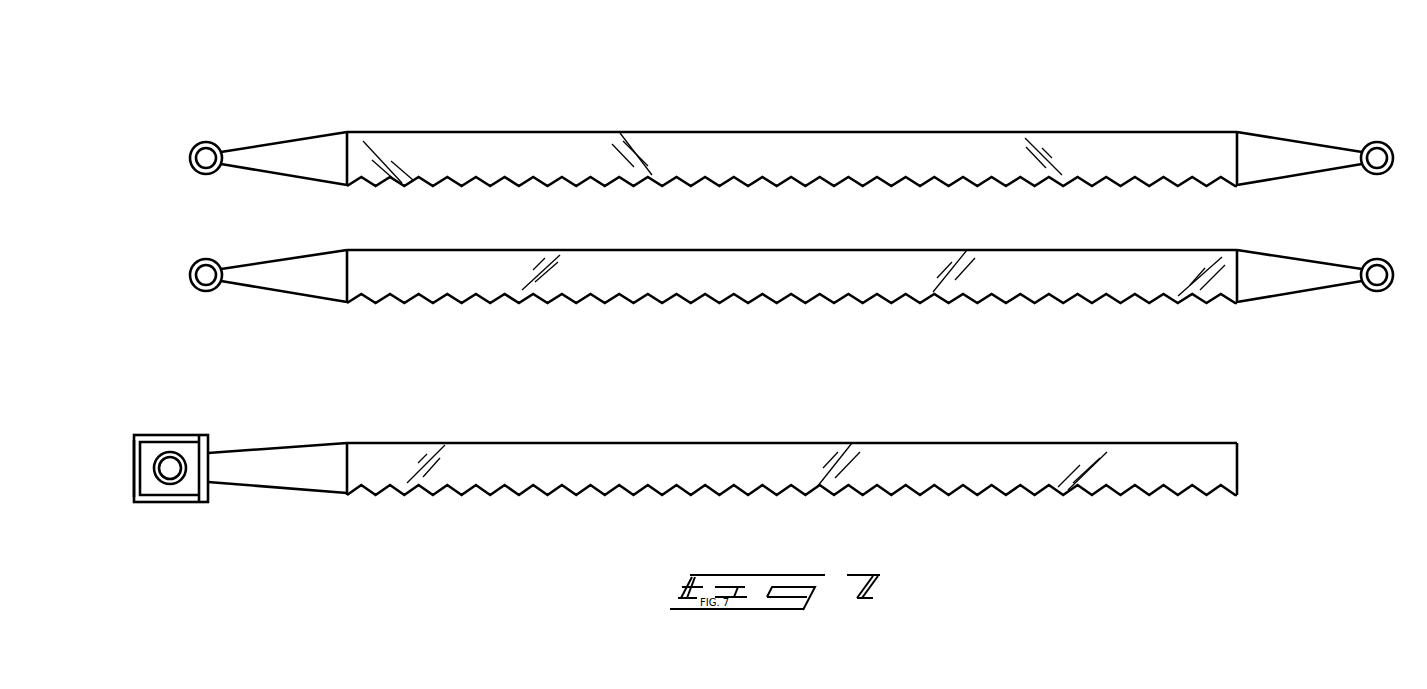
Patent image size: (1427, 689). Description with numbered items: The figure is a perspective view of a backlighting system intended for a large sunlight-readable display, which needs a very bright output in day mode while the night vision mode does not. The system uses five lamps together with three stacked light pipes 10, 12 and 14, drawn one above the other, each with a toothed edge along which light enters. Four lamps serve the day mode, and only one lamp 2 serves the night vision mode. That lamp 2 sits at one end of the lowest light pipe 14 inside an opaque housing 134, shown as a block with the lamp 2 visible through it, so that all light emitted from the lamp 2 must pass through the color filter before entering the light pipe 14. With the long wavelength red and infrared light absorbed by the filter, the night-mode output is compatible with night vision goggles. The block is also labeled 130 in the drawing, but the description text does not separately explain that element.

The light pipe 10 is at (1268, 73).
The light pipe 12 is at (1308, 319).
The light pipe 14 is at (1257, 420).
The mounting block 130 is at (210, 467).
The opaque housing 134 is at (132, 466).
The lamp 2 is at (168, 465).